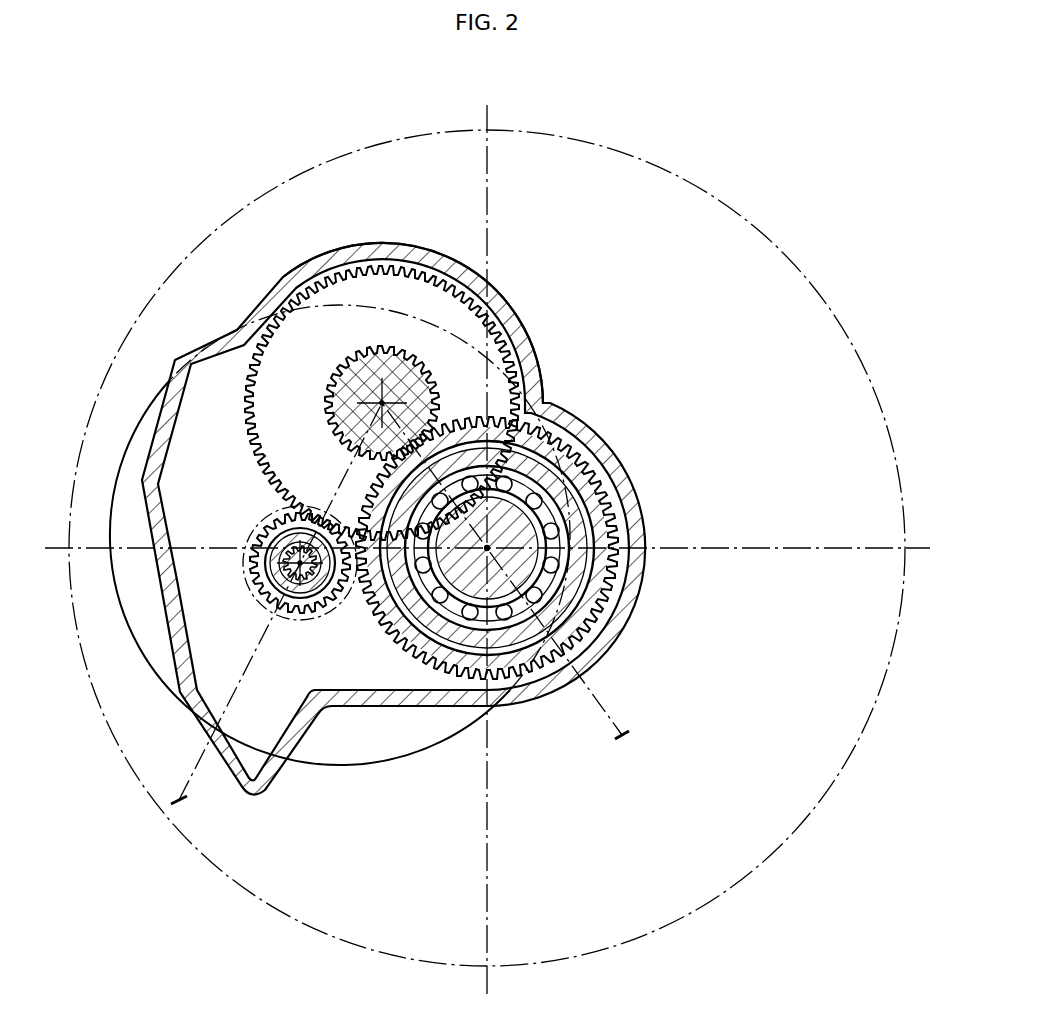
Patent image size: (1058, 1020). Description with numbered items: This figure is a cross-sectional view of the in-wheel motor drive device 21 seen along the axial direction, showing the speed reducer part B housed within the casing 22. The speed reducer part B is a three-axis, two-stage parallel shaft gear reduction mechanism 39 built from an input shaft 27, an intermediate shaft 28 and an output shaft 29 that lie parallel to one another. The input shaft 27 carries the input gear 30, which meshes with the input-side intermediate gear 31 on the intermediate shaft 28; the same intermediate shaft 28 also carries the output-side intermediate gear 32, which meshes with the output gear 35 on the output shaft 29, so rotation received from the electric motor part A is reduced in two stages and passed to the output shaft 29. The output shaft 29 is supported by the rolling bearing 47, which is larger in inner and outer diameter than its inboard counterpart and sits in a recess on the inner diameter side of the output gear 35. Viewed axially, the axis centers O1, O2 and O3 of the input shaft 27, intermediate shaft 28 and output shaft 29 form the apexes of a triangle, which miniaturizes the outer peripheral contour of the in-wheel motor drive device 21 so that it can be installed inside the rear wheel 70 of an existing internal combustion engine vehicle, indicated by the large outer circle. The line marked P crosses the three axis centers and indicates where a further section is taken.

The in-wheel motor drive device 21 is at (600, 363).
The casing 22 is at (414, 241).
The input shaft 27 is at (285, 562).
The intermediate shaft 28 is at (340, 393).
The output shaft 29 is at (545, 579).
The input gear 30 is at (270, 590).
The input-side intermediate gear 31 is at (336, 277).
The output-side intermediate gear 32 is at (407, 353).
The output gear 35 is at (599, 447).
The parallel shaft gear reduction mechanism 39 is at (220, 411).
The rolling bearing 47 is at (421, 642).
The rear wheel 70 is at (737, 212).
The electric motor part A is at (119, 698).
The speed reducer part B is at (533, 329).
The axis center of the input shaft O1 is at (283, 528).
The axis center of the intermediate shaft O2 is at (379, 406).
The axis center of the output shaft O3 is at (505, 545).
The section line P- P is at (188, 798).